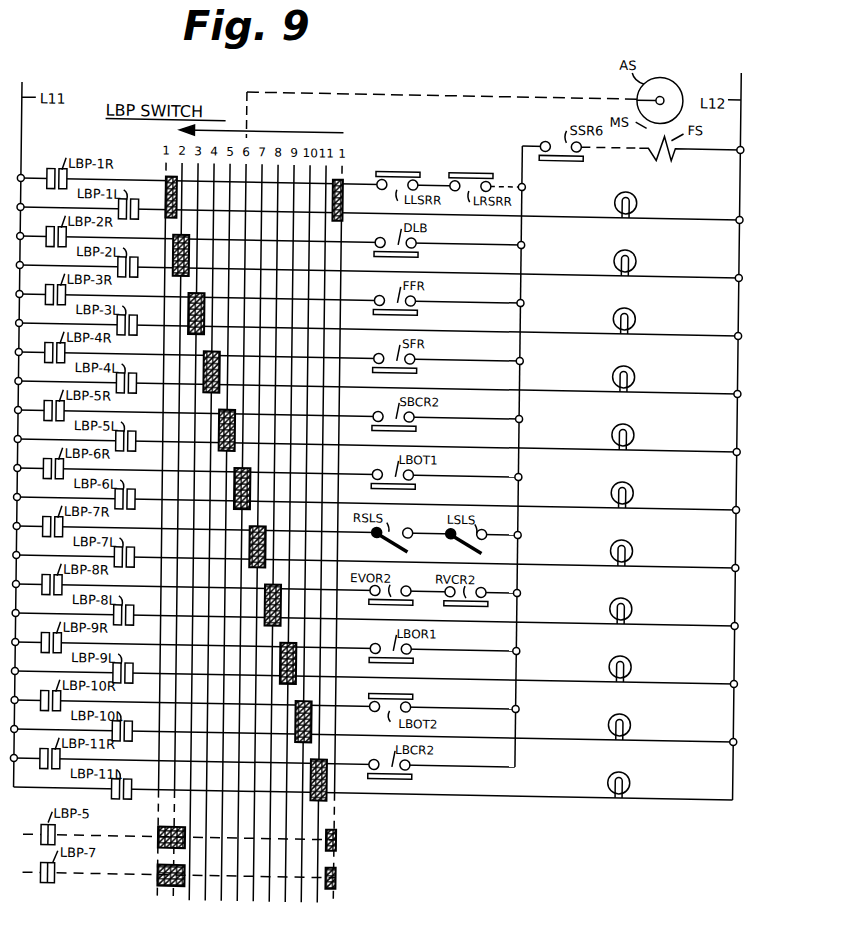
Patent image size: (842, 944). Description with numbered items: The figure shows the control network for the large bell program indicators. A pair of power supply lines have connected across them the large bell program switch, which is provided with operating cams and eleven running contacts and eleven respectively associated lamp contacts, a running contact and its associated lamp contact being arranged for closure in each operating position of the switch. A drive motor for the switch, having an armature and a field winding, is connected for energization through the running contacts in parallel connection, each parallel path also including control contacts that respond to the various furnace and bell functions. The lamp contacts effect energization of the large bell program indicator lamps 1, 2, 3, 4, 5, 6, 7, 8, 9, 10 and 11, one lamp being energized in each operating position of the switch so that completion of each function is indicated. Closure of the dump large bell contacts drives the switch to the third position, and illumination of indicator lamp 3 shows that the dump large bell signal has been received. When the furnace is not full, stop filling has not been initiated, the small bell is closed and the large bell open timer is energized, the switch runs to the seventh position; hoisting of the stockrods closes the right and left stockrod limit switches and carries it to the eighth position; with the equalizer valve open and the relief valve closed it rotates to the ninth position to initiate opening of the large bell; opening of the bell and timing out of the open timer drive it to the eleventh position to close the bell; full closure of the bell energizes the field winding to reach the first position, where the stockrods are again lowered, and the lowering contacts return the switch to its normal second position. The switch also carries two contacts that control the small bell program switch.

The large bell program indicator lamp 1 is at (634, 185).
The large bell program indicator lamp 2 is at (634, 243).
The large bell program indicator lamp 3 is at (634, 301).
The large bell program indicator lamp 4 is at (634, 359).
The large bell program indicator lamp 5 is at (634, 417).
The large bell program indicator lamp 6 is at (634, 475).
The large bell program indicator lamp 7 is at (634, 533).
The large bell program indicator lamp 8 is at (634, 591).
The large bell program indicator lamp 9 is at (634, 649).
The large bell program indicator lamp 10 is at (634, 707).
The large bell program indicator lamp 11 is at (634, 765).